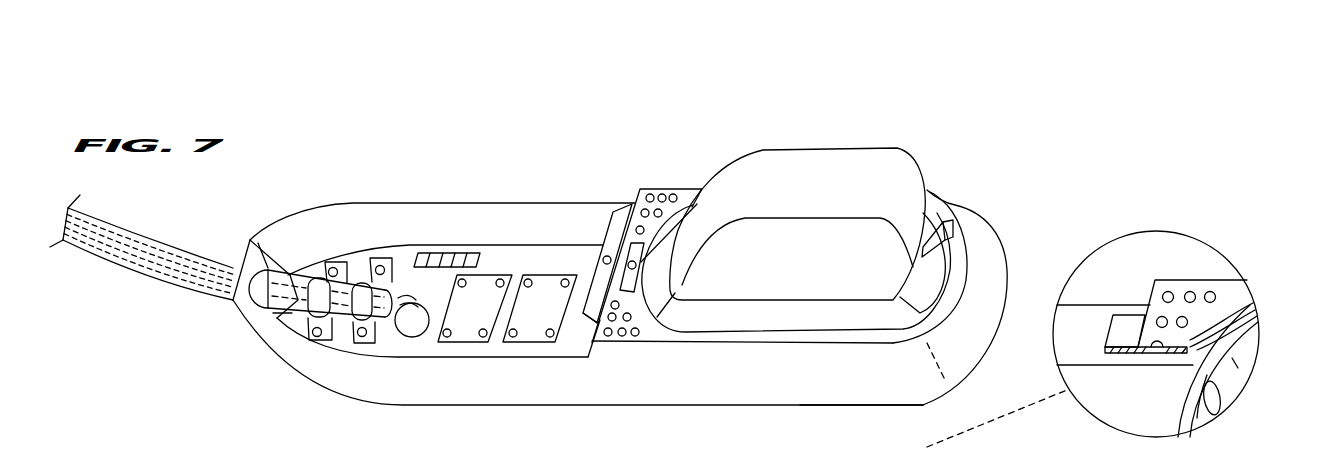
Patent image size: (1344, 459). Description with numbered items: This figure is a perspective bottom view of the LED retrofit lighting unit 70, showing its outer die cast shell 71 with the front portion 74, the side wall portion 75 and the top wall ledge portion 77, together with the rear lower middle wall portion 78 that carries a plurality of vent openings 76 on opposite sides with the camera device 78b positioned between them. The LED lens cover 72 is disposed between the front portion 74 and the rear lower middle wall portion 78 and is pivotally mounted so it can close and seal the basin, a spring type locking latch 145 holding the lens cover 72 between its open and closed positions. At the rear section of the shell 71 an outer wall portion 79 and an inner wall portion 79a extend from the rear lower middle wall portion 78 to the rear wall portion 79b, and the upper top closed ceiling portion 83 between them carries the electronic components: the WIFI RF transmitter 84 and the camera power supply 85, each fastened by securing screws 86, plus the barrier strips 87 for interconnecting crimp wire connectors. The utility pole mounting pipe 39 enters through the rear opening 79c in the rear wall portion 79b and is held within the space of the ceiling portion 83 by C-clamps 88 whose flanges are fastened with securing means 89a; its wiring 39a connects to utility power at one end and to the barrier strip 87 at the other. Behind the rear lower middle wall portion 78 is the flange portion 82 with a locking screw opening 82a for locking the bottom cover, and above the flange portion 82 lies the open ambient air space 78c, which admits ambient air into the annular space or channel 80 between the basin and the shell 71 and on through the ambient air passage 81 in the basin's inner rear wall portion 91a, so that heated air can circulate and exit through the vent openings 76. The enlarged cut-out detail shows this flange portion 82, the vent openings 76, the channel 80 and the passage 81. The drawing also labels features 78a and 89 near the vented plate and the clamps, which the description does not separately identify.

The LED retrofit lighting unit 70 is at (796, 97).
The outer die cast shell 71 is at (957, 393).
The LED lens cover 72 is at (870, 190).
The front portion 74 is at (992, 327).
The side wall portion 75 is at (885, 380).
The vent openings 76 is at (664, 188).
The top wall ledge portion 77 is at (777, 338).
The rear lower middle wall portion 78 is at (700, 190).
The plate slot 78a is at (641, 204).
The camera device 78b is at (686, 208).
The open ambient air space 78c is at (1128, 385).
The outer wall portion 79 is at (520, 385).
The inner wall portion 79a is at (482, 208).
The rear wall portion 79b is at (258, 248).
The rear opening 79c is at (250, 320).
The annular space or channel 80 is at (1255, 307).
The ambient air passage 81 is at (1210, 405).
The flange portion 82 is at (623, 215).
The locking screw opening 82a is at (604, 256).
The upper top closed ceiling portion 83 is at (801, 334).
The WIFI RF transmitter 84 is at (540, 308).
The camera power supply 85 is at (475, 308).
The securing screws 86 is at (505, 272).
The barrier strips 87 is at (440, 252).
The C-clamps 88 is at (292, 265).
The screw 89 is at (383, 262).
The securing means 89a is at (380, 262).
The utility pole mounting pipe 39 is at (142, 241).
The wiring 39a is at (170, 272).
The inner rear wall portion 91a is at (1250, 358).
The spring type locking latch 145 is at (947, 220).